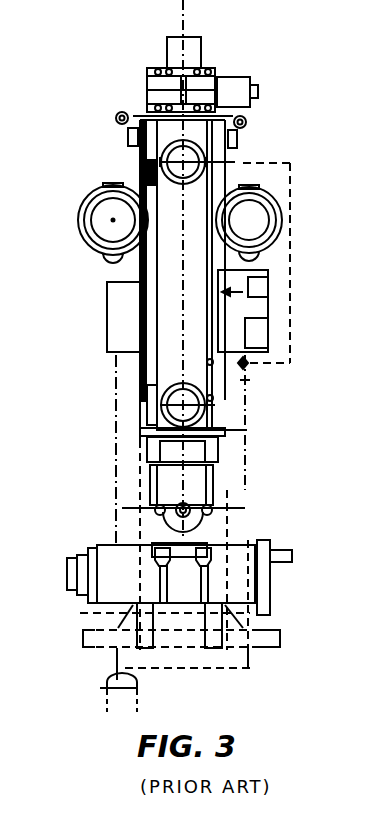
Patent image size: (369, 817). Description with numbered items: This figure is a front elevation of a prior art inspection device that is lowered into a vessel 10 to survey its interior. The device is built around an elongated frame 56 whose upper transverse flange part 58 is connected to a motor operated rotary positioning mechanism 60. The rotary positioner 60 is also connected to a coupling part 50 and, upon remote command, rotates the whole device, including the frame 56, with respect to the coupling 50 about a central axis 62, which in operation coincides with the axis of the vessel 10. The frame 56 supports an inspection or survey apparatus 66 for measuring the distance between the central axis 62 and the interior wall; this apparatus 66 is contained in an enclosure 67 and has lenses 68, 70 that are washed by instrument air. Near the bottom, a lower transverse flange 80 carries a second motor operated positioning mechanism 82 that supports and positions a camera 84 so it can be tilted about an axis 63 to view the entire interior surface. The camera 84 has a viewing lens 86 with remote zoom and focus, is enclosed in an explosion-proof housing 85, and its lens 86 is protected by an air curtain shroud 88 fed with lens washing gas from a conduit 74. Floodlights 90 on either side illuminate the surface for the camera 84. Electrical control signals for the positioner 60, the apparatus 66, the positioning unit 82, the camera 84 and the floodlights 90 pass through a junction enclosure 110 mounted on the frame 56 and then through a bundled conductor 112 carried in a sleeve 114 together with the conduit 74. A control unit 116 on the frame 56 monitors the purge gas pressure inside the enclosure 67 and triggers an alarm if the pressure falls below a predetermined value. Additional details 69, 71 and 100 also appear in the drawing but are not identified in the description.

The vessel 10 is at (302, 190).
The coupling part 50 is at (203, 56).
The elongated frame 56 is at (243, 380).
The upper transverse flange part 58 is at (250, 100).
The rotary positioning mechanism 60 is at (147, 90).
The central axis 62 is at (140, 332).
The tilt axis 63 is at (205, 520).
The inspection or survey apparatus 66 is at (250, 290).
The enclosure 67 is at (160, 272).
The lens 68 is at (140, 170).
The bearing retainer 69 is at (140, 152).
The lens 70 is at (140, 410).
The bearing retainer 71 is at (140, 387).
The conduit 74 is at (246, 670).
The lower transverse flange 80 is at (243, 430).
The positioning mechanism 82 is at (226, 467).
The camera 84 is at (270, 540).
The explosion-proof housing 85 is at (270, 587).
The viewing lens 86 is at (68, 588).
The air curtain shroud 88 is at (68, 556).
The projecting floodlight 90 is at (78, 222).
The fastener 100 is at (126, 138).
The junction enclosure 110 is at (107, 305).
The bundled conductor 112 is at (108, 495).
The sleeve 114 is at (105, 690).
The control unit 116 is at (268, 304).